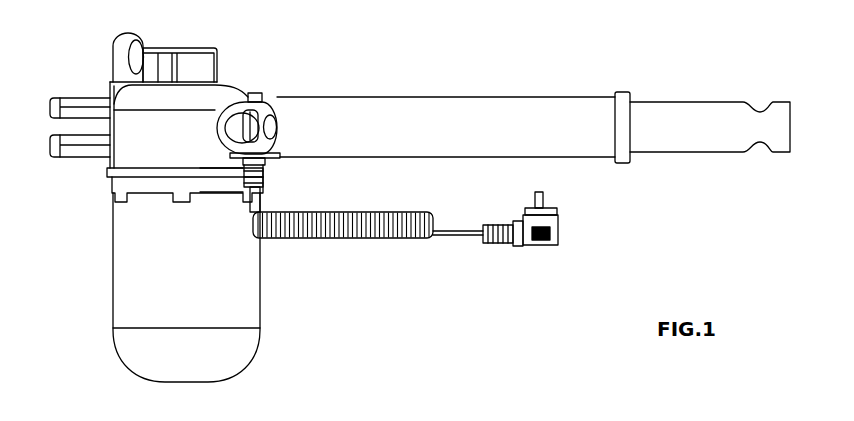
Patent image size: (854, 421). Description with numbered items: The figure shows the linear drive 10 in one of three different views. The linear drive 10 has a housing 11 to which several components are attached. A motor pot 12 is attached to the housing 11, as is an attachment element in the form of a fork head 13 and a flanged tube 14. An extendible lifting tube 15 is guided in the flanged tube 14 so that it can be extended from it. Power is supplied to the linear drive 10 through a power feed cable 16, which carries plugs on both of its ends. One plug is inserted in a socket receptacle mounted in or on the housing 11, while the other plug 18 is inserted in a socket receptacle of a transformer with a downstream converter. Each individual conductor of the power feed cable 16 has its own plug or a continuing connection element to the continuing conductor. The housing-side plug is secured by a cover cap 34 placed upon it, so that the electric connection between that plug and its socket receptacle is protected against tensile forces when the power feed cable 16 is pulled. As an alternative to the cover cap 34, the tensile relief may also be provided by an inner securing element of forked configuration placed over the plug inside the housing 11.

The linear drive 10 is at (260, 281).
The housing 11 is at (192, 140).
The motor pot 12 is at (153, 270).
The fork head 13 is at (72, 98).
The flanged tube 14 is at (435, 118).
The lifting tube 15 is at (670, 117).
The power feed cable 16 is at (403, 240).
The plug 18 is at (553, 222).
The cover cap 34 is at (280, 128).